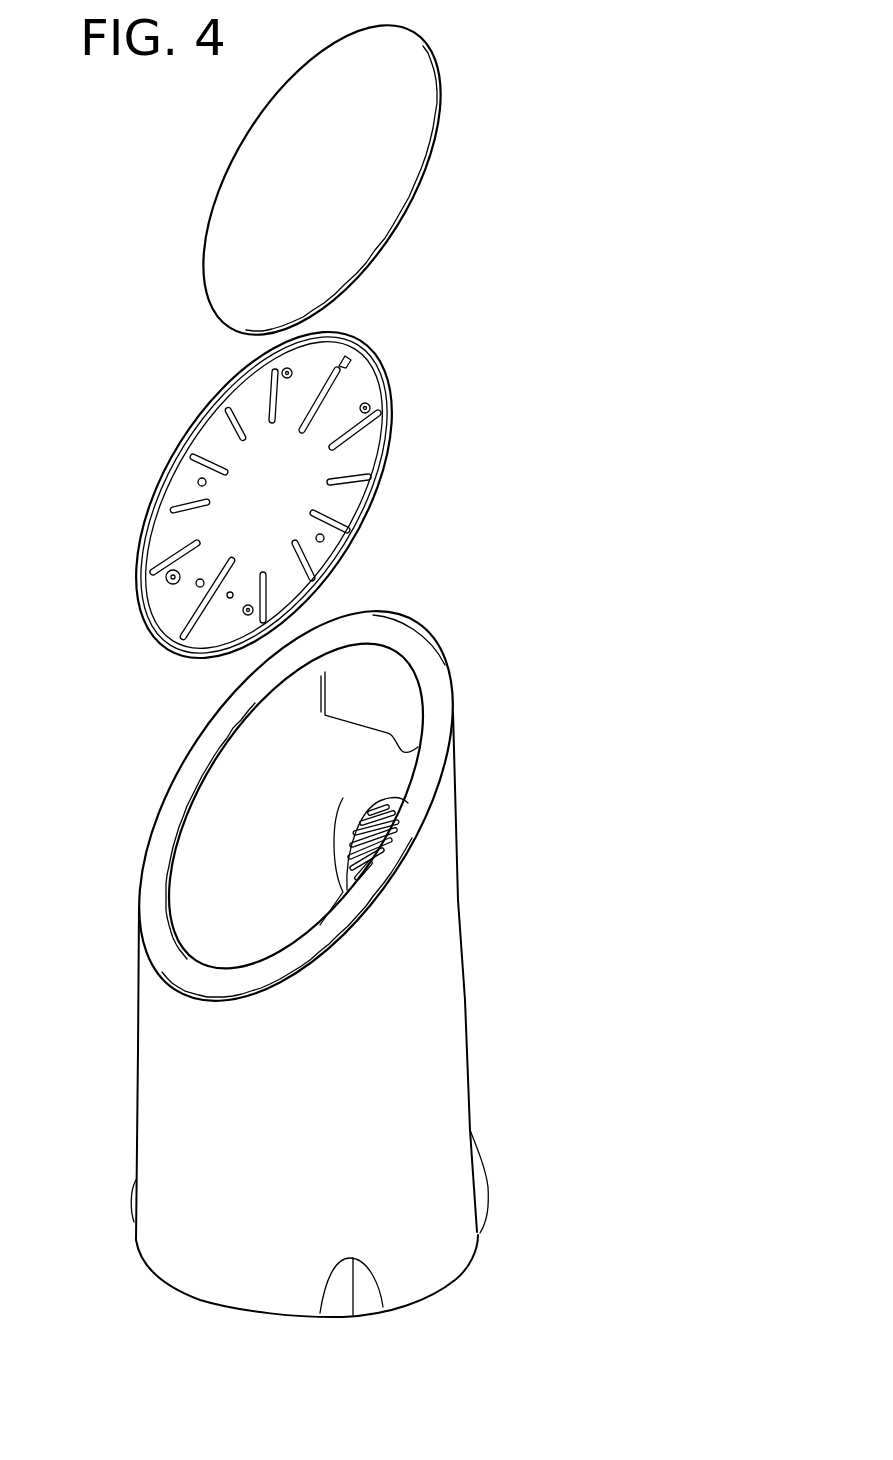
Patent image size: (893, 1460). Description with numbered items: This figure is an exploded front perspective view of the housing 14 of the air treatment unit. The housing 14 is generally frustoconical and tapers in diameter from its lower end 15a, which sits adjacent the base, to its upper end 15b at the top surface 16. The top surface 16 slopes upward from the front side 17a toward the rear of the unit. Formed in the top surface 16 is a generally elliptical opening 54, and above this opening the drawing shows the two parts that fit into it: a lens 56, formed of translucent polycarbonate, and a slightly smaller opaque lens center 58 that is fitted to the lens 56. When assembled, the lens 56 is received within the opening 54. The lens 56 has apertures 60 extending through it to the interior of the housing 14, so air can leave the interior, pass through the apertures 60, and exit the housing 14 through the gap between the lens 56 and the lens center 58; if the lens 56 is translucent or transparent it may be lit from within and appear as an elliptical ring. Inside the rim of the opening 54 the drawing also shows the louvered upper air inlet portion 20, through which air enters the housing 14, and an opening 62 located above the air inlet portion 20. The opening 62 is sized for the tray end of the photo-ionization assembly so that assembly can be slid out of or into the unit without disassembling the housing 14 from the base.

The housing 14 is at (459, 838).
The lower end 15a is at (440, 1284).
The upper end 15b is at (428, 641).
The top surface 16 is at (435, 697).
The front side 17a is at (175, 1125).
The upper air inlet portion 20 is at (333, 840).
The elliptical opening 54 is at (192, 800).
The lens 56 is at (180, 455).
The lens center 58 is at (231, 178).
The apertures 60 is at (227, 597).
The opening 62 is at (338, 718).